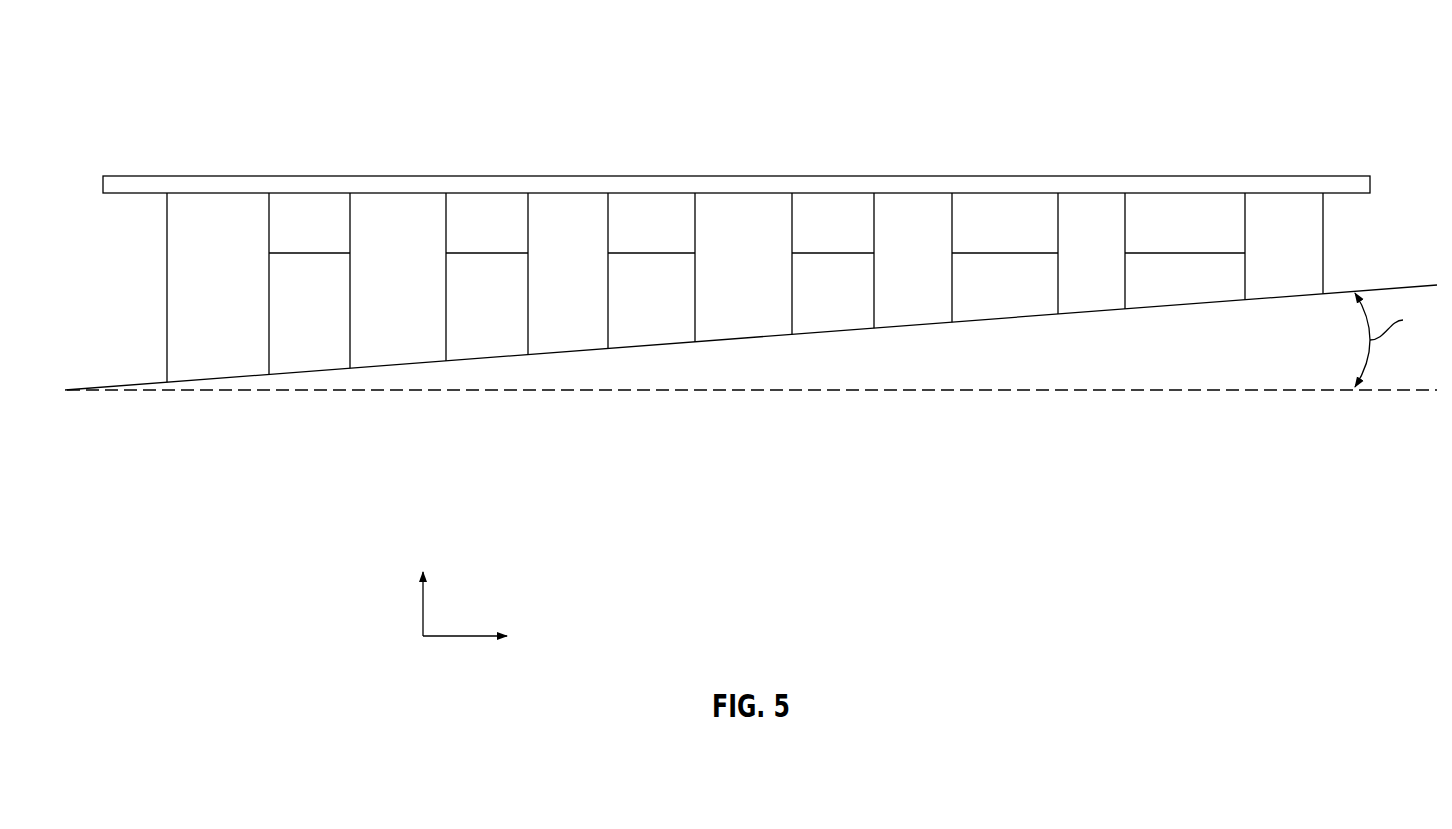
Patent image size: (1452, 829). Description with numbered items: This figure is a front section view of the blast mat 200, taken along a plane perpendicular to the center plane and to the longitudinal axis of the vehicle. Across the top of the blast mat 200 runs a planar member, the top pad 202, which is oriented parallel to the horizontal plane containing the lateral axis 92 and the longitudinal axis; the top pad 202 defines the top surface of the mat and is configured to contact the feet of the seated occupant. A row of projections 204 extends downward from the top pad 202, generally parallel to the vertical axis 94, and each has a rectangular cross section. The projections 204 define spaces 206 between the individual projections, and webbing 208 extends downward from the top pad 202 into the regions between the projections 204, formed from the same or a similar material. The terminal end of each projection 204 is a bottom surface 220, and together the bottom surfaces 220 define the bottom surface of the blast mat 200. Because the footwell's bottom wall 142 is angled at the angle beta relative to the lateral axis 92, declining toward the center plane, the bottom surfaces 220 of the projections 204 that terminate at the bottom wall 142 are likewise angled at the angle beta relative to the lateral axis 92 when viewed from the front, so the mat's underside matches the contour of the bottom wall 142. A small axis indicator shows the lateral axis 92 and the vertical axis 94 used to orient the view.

The blast mat 200 is at (192, 120).
The top pad 202 is at (507, 176).
The projections 204 is at (1306, 248).
The webbing 208 is at (1207, 236).
The spaces 206 is at (747, 354).
The bottom surface 220 is at (750, 379).
The bottom wall 142 is at (812, 338).
The lateral axis 92 is at (452, 638).
The vertical axis 94 is at (423, 598).